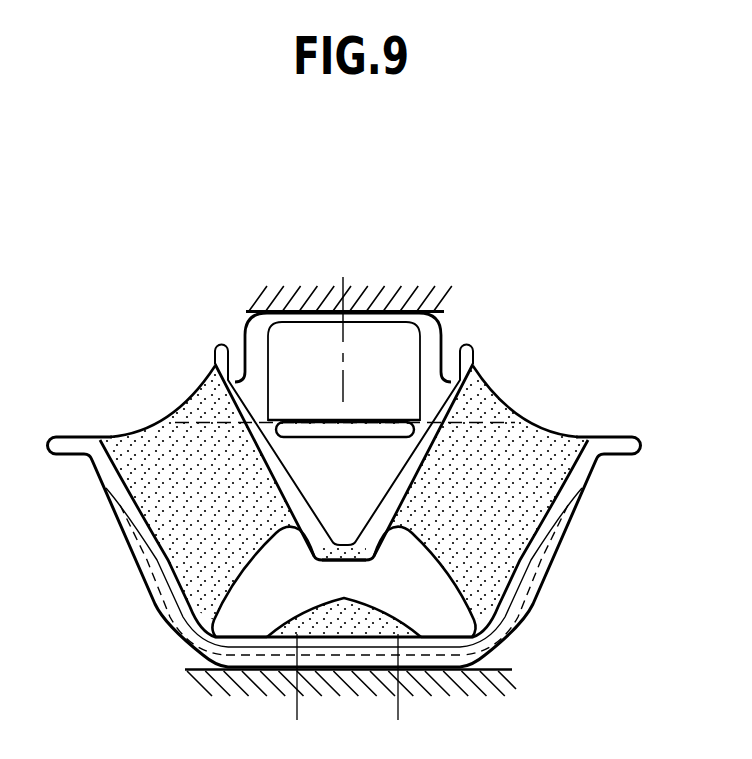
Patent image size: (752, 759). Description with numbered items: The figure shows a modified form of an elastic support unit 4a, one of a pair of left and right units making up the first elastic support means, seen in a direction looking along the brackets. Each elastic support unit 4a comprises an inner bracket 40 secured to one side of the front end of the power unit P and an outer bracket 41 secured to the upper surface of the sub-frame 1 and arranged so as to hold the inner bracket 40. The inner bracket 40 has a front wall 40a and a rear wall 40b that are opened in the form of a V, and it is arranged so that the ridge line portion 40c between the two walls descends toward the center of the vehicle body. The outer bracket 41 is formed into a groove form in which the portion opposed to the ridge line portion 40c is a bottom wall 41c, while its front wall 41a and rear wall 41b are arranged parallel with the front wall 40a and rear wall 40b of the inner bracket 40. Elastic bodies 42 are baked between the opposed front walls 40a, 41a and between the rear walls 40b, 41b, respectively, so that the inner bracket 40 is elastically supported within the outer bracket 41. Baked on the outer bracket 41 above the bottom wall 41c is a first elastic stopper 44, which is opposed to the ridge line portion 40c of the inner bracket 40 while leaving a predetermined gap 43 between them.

The power unit P is at (440, 299).
The sub-frame 1 is at (491, 688).
The elastic support unit 4a is at (570, 377).
The inner bracket 40 is at (345, 418).
The front wall of inner bracket 40a is at (424, 455).
The rear wall of inner bracket 40b is at (263, 447).
The ridge line portion 40c is at (342, 546).
The outer bracket 41 is at (344, 561).
The front wall of outer bracket 41a is at (540, 543).
The rear wall of outer bracket 41b is at (148, 537).
The bottom wall 41c is at (347, 675).
The elastic body 42 is at (190, 416).
The gap 43 is at (355, 586).
The first elastic stopper 44 is at (312, 612).